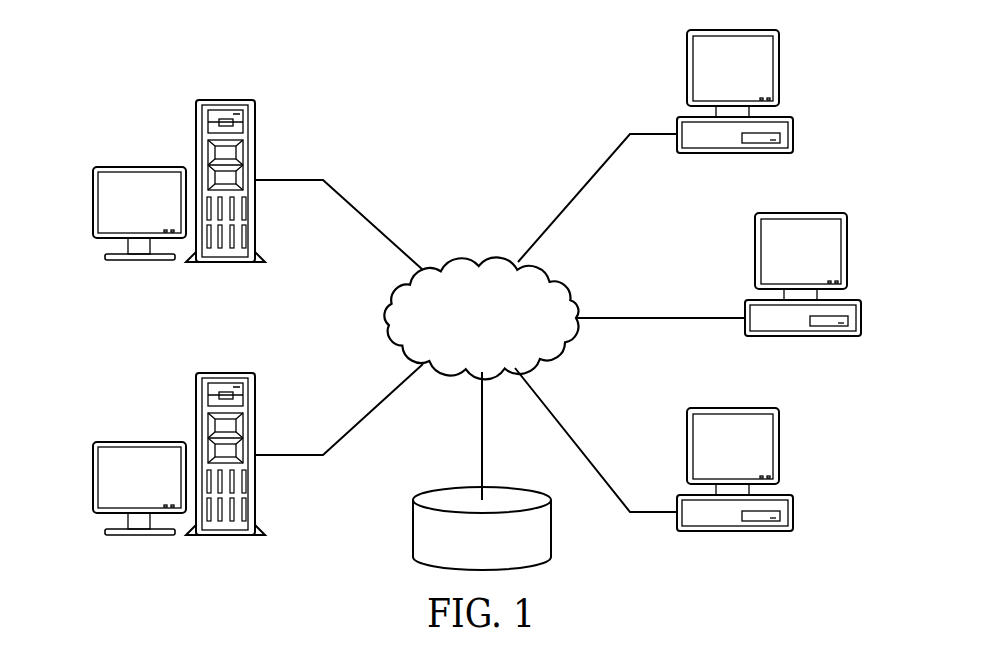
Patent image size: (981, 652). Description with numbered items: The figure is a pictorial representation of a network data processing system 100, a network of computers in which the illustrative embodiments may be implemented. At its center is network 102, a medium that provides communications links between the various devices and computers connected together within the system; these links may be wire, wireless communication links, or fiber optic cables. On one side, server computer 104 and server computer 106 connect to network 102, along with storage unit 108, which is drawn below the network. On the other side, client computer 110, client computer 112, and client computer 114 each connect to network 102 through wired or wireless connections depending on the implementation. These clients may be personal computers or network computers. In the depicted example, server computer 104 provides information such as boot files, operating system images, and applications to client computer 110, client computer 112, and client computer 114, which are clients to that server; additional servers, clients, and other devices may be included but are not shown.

The network data processing system 100 is at (325, 70).
The network 102 is at (478, 258).
The server computer 104 is at (93, 200).
The server computer 106 is at (93, 477).
The storage unit 108 is at (413, 527).
The client computer 110 is at (793, 125).
The client computer 112 is at (862, 308).
The client computer 114 is at (793, 520).